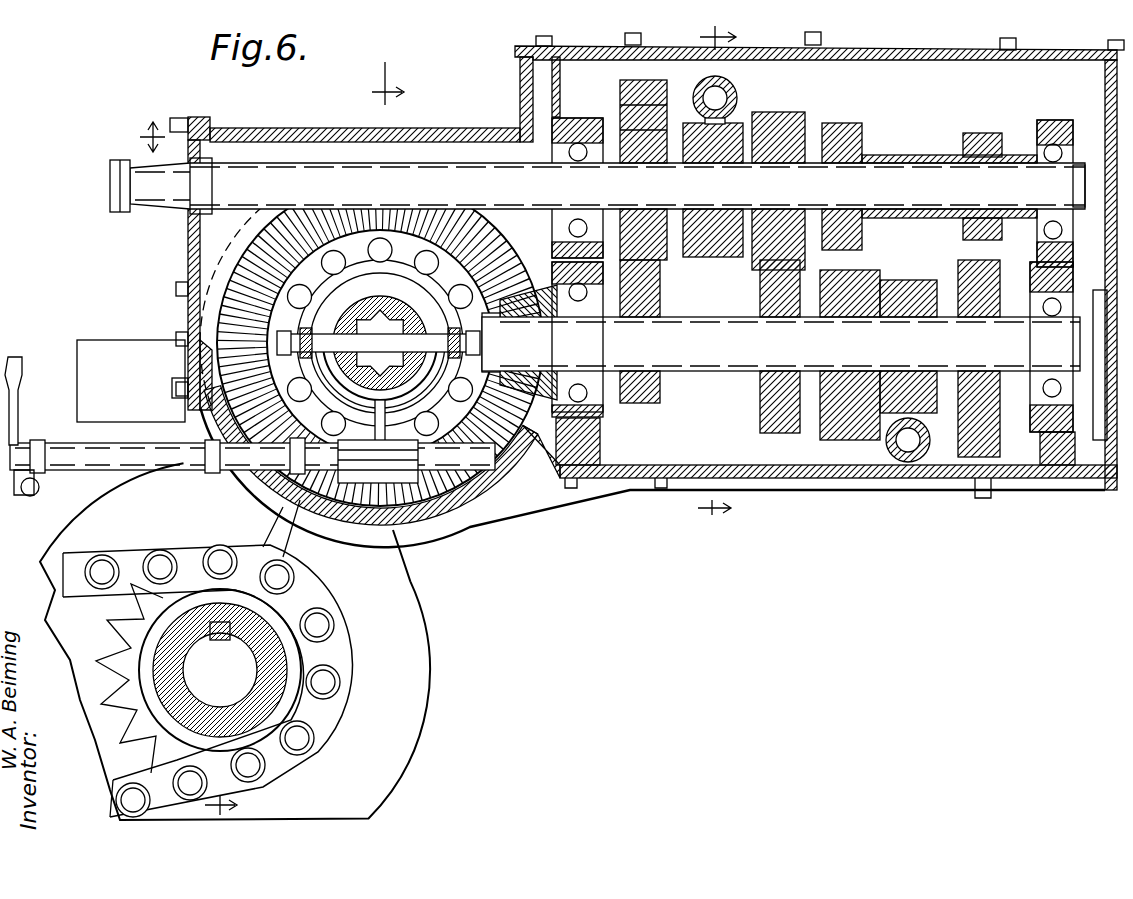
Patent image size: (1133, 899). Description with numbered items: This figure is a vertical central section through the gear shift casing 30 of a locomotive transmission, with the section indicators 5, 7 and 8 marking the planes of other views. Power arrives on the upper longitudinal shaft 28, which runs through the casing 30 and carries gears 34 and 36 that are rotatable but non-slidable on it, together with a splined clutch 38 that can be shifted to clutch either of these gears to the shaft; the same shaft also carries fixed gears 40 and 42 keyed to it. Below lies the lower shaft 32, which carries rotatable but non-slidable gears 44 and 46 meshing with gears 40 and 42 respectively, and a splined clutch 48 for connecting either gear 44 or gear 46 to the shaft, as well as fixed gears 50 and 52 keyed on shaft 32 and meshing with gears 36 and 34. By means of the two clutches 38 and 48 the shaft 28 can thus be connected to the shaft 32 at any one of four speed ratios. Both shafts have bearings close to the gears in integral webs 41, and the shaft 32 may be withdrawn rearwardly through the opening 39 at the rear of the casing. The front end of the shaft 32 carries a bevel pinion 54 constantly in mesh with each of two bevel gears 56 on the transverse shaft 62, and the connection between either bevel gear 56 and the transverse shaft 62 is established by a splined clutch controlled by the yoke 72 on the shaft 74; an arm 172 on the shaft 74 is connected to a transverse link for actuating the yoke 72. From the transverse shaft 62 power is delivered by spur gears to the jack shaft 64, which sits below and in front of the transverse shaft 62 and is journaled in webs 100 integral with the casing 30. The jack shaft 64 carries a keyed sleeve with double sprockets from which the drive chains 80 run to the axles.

The section line 5 is at (147, 137).
The section line 7 is at (304, 439).
The section line 8 is at (709, 280).
The upper longitudinal shaft 28 is at (235, 178).
The gear shift casing 30 is at (478, 120).
The lower shaft 32 is at (716, 372).
The gear 34 is at (622, 100).
The gear 36 is at (785, 120).
The splined clutch 38 is at (735, 128).
The opening 39 is at (1096, 410).
The fixed gear 40 is at (858, 132).
The integral webs 41 is at (600, 440).
The fixed gear 42 is at (982, 135).
The gear 44 is at (998, 458).
The gear 46 is at (846, 442).
The splined clutch 48 is at (905, 300).
The fixed gear 50 is at (760, 420).
The fixed gear 52 is at (648, 403).
The bevel pinion 54 is at (540, 285).
The bevel gears 56 is at (556, 430).
The transverse shaft 62 is at (395, 330).
The jack shaft 64 is at (250, 650).
The yoke 72 is at (420, 405).
The shaft 74 is at (122, 458).
The drive chains 80 is at (118, 560).
The webs 100 is at (400, 540).
The arm 172 is at (22, 415).